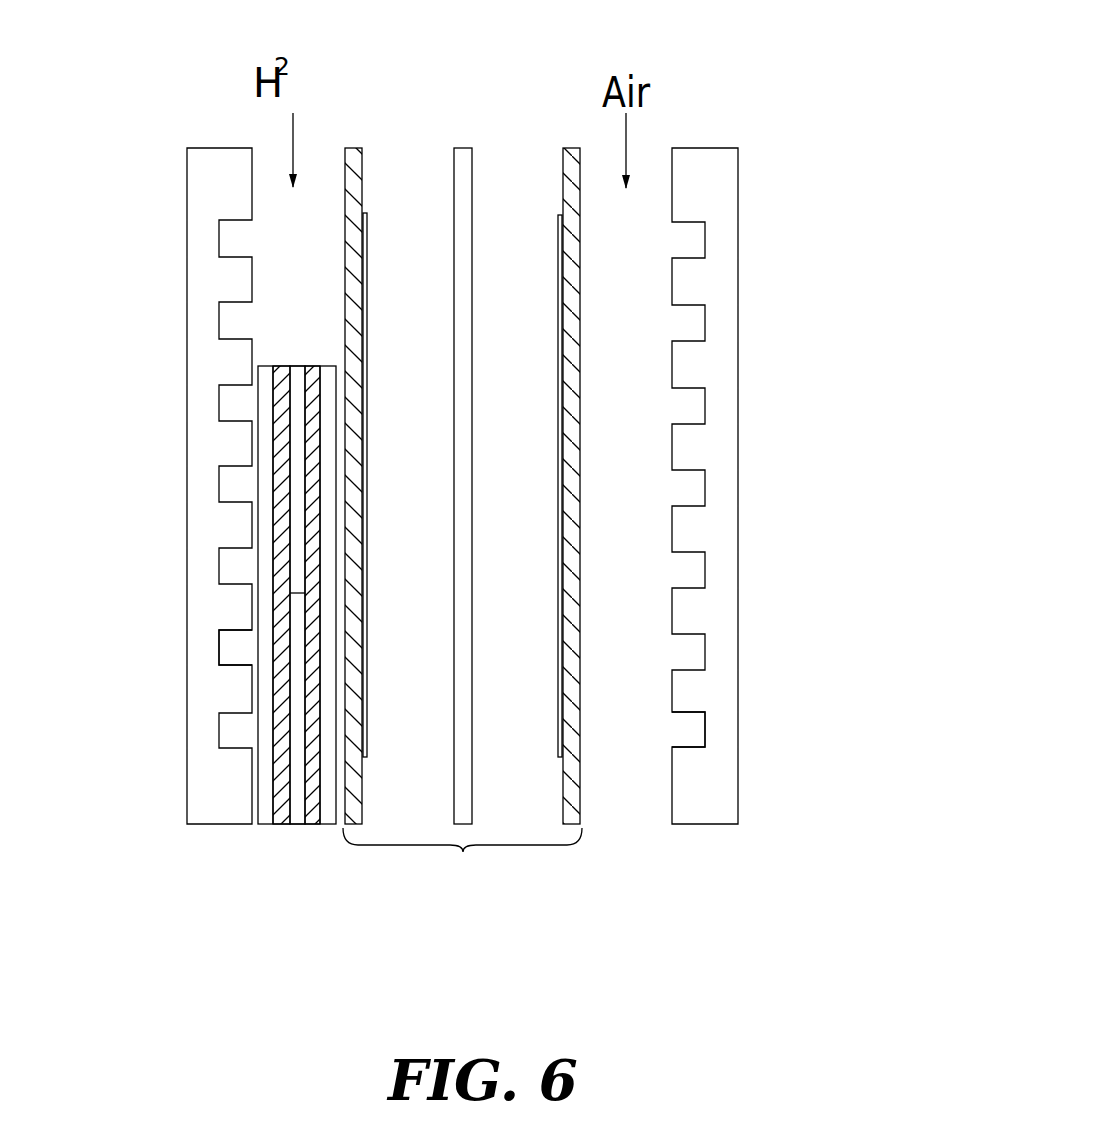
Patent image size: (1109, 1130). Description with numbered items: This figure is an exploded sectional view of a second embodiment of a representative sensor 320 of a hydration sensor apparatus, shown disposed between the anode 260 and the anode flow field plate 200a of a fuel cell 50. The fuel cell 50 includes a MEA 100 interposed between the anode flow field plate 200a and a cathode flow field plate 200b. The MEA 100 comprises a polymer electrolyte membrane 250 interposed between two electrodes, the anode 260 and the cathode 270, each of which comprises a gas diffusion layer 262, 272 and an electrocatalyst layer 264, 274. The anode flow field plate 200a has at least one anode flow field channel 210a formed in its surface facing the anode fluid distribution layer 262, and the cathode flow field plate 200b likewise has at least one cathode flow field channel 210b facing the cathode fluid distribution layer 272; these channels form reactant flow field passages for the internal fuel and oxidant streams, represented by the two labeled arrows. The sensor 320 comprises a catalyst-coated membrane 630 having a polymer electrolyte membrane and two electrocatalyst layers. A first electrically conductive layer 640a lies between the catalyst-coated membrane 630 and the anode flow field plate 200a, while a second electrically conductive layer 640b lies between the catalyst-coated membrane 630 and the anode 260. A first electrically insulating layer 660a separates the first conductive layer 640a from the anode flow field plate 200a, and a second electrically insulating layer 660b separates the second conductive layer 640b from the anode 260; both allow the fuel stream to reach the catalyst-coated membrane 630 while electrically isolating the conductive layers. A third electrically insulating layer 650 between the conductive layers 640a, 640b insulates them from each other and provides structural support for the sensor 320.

The fuel cell 50 is at (692, 85).
The MEA 100 is at (463, 852).
The anode flow field plate 200a is at (220, 803).
The cathode flow field plate 200b is at (710, 810).
The anode flow field channel 210a is at (227, 650).
The cathode flow field channel 210b is at (693, 730).
The polymer electrolyte membrane 250 is at (458, 827).
The anode 260 is at (317, 521).
The gas diffusion layer 262 is at (345, 277).
The electrocatalyst layer 264 is at (365, 255).
The cathode 270 is at (619, 517).
The gas diffusion layer 272 is at (580, 253).
The electrocatalyst layer 274 is at (560, 257).
The sensor 320 is at (205, 523).
The catalyst-coated membrane 630 is at (297, 366).
The first electrically conductive layer 640a is at (278, 373).
The second electrically conductive layer 640b is at (317, 440).
The third electrically insulating layer 650 is at (297, 722).
The first electrically insulating layer 660a is at (267, 490).
The second electrically insulating layer 660b is at (328, 550).